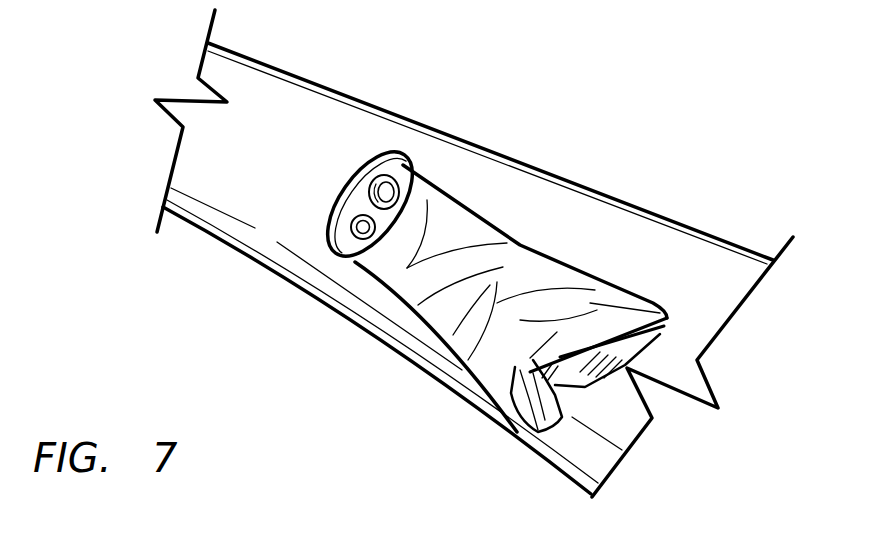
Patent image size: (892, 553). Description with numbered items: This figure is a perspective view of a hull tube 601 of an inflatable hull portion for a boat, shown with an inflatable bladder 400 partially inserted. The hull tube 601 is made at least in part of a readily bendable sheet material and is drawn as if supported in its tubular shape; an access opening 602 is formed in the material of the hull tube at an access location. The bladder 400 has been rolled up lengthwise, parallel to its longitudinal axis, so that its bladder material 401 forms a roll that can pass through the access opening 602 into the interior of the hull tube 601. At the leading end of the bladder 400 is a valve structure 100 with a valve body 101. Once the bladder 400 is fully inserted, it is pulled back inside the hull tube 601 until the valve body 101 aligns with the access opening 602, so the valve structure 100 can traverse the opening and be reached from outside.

The hull tube 601 is at (238, 78).
The access opening 602 is at (367, 150).
The valve structure 100 is at (488, 207).
The valve body 101 is at (423, 323).
The inflatable bladder 400 is at (563, 258).
The bladder material 401 is at (527, 352).